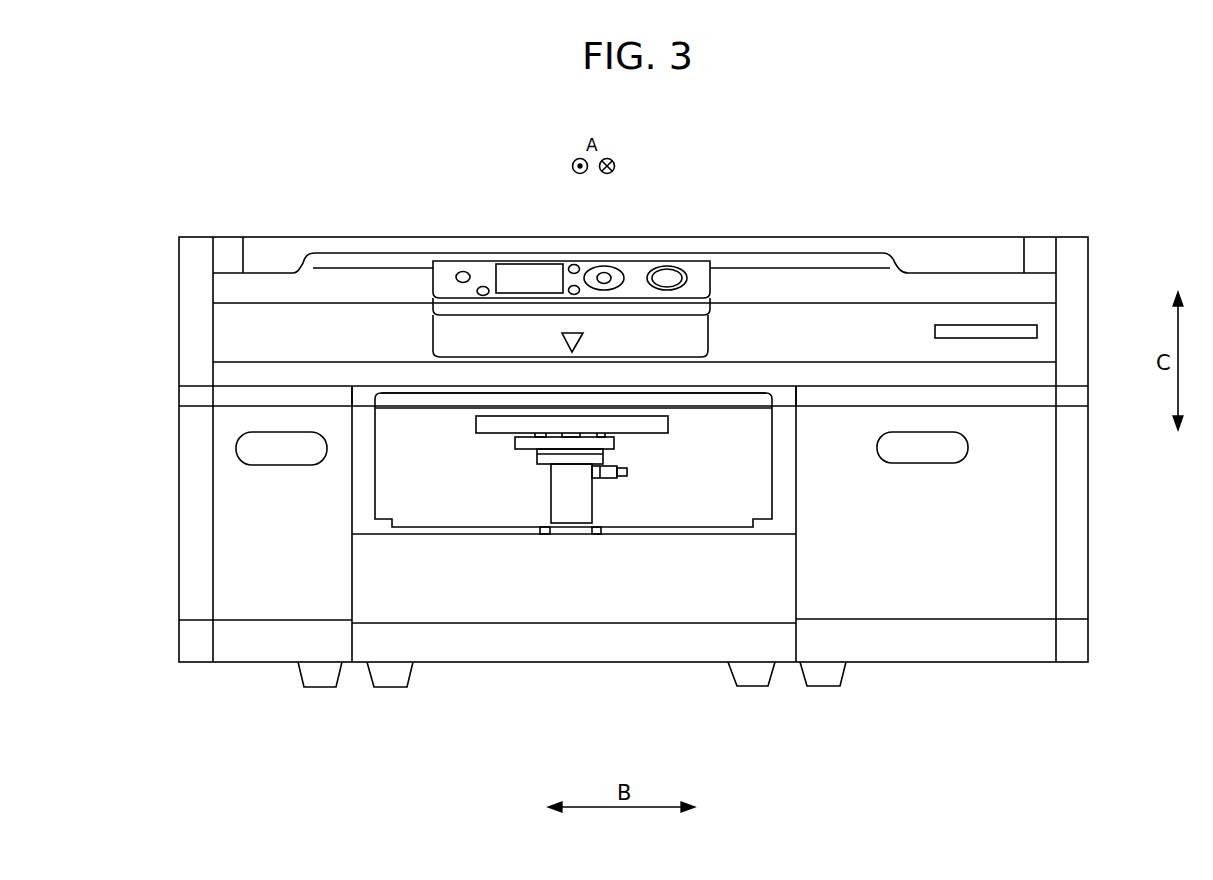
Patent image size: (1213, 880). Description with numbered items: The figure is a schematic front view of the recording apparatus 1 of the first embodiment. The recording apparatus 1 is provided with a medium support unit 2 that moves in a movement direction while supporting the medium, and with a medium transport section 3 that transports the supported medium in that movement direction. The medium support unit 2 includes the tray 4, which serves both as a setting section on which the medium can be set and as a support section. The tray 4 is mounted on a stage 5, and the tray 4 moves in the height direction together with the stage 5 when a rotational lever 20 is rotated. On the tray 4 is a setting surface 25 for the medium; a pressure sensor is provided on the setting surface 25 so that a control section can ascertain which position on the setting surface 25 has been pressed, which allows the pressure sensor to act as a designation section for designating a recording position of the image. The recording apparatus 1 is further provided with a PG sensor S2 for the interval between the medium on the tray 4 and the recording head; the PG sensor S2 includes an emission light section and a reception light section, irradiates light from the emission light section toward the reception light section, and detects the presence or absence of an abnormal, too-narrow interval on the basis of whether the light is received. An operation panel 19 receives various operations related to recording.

The recording apparatus 1 is at (998, 181).
The medium support unit 2 is at (731, 369).
The medium transport section 3 is at (710, 578).
The tray 4 is at (405, 403).
The stage 5 is at (498, 425).
The operation panel 19 is at (536, 277).
The rotational lever 20 is at (582, 443).
The setting surface 25 is at (459, 393).
The PG sensor S2 is at (354, 385).